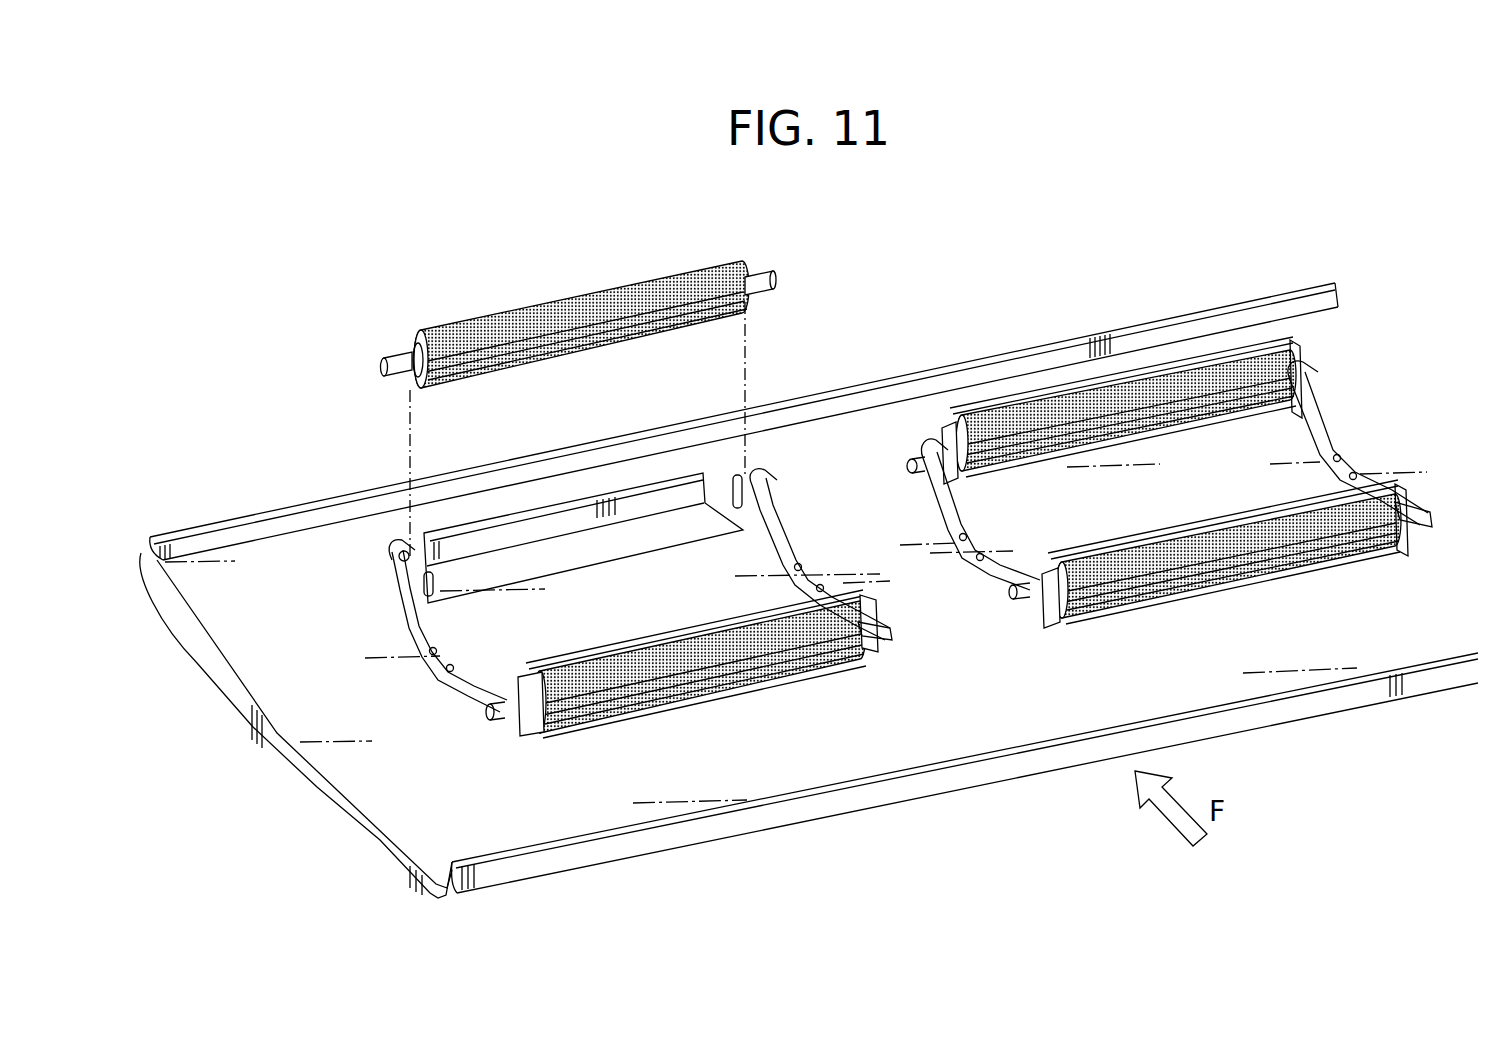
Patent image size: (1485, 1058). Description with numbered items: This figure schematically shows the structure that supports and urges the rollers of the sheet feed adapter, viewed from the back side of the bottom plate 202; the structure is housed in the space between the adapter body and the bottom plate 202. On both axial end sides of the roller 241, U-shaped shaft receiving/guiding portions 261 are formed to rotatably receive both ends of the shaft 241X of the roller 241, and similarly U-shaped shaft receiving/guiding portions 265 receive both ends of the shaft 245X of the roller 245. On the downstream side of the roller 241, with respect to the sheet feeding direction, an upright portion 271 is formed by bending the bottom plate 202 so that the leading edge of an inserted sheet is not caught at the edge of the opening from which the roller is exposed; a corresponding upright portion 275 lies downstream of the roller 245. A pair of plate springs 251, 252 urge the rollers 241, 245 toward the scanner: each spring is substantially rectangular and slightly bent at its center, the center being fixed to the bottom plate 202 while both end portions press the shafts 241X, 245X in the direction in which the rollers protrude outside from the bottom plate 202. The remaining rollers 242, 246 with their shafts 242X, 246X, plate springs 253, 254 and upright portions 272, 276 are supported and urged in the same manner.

The bottom plate 202 is at (870, 752).
The roller 241 is at (673, 673).
The shaft 241X is at (487, 713).
The roller 242 is at (1260, 574).
The shaft 242X is at (1005, 598).
The roller 245 is at (577, 309).
The shaft 245X is at (389, 352).
The roller 246 is at (1087, 393).
The shaft 246X is at (912, 468).
The plate spring 251 is at (447, 680).
The plate spring 252 is at (823, 574).
The plate spring 253 is at (967, 560).
The plate spring 254 is at (1340, 457).
The U-shaped shaft receiving/guiding portion 261 is at (523, 733).
The U-shaped shaft receiving/guiding portion 265 is at (398, 590).
The upright portion 271 is at (630, 643).
The upright portion 272 is at (1132, 537).
The upright portion 275 is at (568, 515).
The upright portion 276 is at (1190, 367).